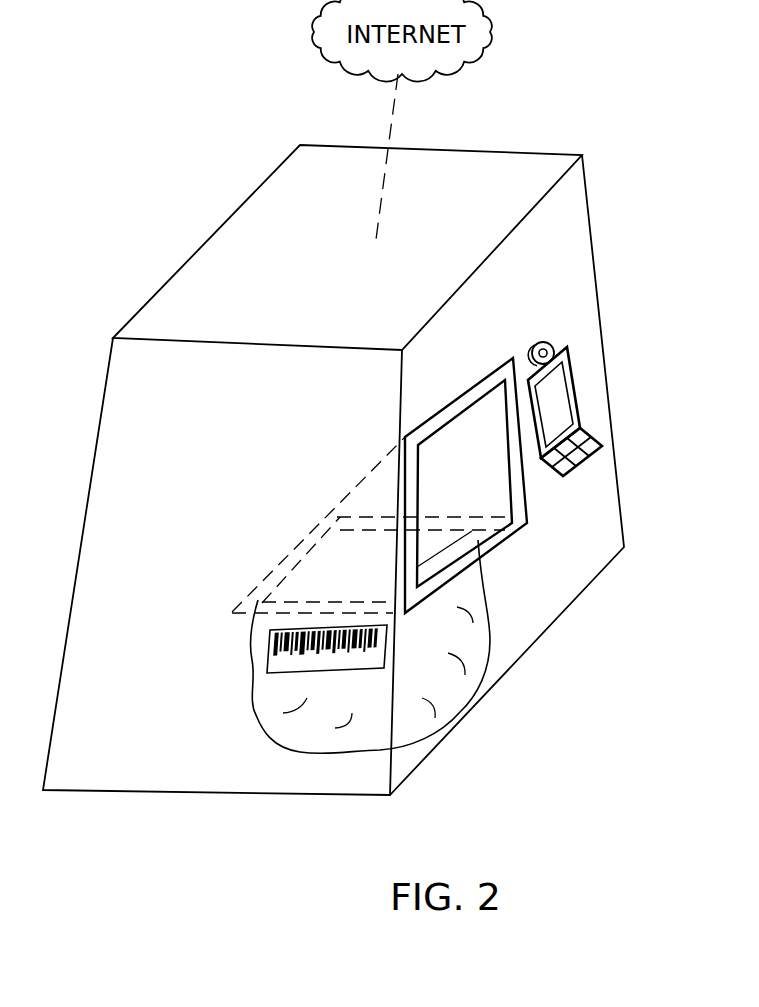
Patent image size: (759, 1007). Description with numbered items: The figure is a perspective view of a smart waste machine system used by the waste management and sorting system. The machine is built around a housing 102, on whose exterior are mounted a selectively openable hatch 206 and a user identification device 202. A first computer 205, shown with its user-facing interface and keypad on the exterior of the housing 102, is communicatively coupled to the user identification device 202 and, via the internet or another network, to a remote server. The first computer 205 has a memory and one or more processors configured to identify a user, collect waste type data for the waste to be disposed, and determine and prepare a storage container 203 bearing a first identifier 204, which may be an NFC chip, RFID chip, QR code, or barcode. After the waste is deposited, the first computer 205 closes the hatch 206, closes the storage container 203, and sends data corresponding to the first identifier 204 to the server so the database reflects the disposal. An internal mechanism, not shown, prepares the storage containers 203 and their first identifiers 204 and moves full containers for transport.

The housing 102 is at (257, 225).
The user identification device 202 is at (553, 346).
The storage container 203 is at (445, 680).
The first identifier 204 is at (295, 658).
The first computer 205 is at (568, 414).
The selectively openable hatch 206 is at (493, 502).